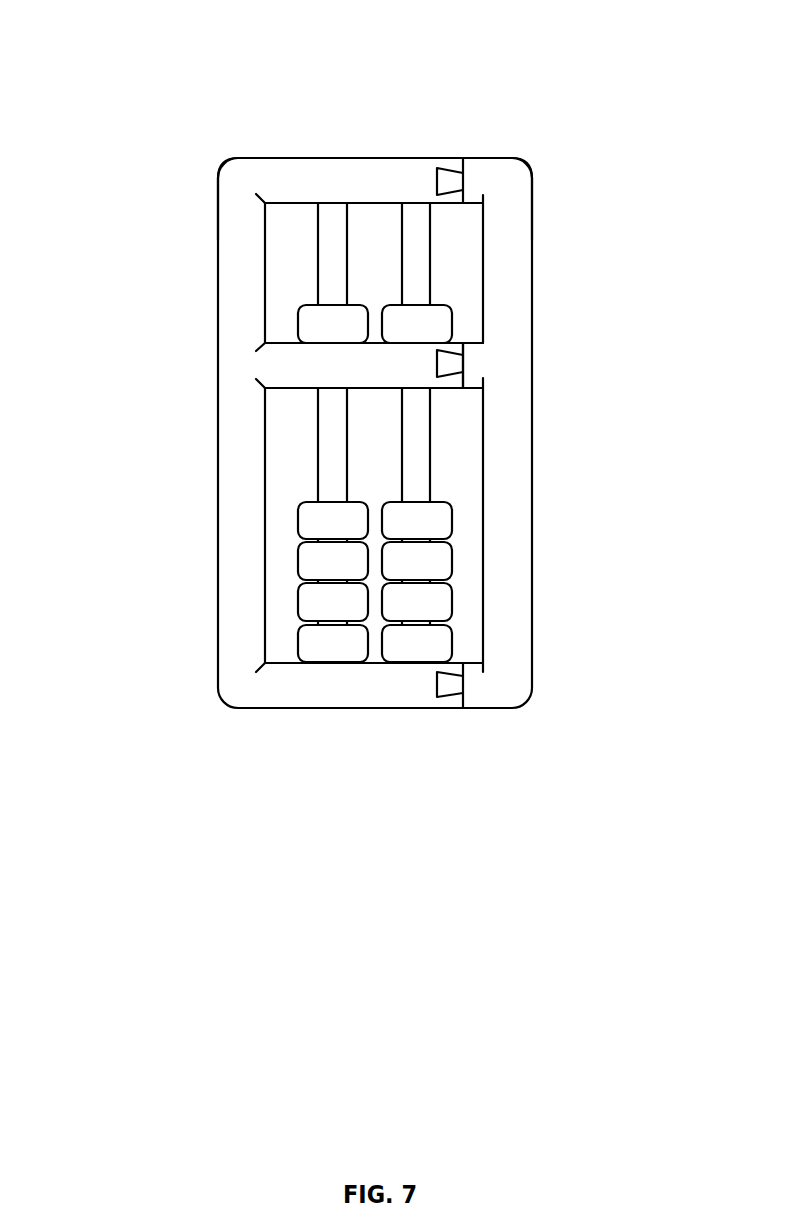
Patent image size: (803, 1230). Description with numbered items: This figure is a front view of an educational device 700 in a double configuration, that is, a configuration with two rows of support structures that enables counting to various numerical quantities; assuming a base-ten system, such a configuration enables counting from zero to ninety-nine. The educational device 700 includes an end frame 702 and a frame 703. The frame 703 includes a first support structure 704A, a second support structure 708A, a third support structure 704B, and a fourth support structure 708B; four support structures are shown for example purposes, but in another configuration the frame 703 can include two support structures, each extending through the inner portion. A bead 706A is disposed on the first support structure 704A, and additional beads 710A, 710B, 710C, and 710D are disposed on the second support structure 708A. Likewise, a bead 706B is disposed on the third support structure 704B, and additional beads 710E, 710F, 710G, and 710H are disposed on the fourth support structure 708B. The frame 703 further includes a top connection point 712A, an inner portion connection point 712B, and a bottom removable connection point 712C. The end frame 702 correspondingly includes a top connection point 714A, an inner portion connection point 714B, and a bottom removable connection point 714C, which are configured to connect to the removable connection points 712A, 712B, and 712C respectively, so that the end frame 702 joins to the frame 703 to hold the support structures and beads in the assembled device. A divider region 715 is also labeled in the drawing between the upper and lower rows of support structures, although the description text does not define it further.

The educational device 700 is at (162, 40).
The end frame 702 is at (521, 162).
The frame 703 is at (225, 158).
The first support structure 704A is at (317, 243).
The third support structure 704B is at (433, 273).
The bead 706A is at (293, 313).
The bead 706B is at (396, 303).
The second support structure 708A is at (313, 445).
The fourth support structure 708B is at (433, 477).
The bead 710A is at (288, 515).
The bead 710B is at (288, 556).
The bead 710C is at (288, 596).
The bead 710D is at (288, 636).
The bead 710E is at (457, 518).
The bead 710F is at (458, 558).
The bead 710G is at (458, 598).
The bead 710H is at (458, 640).
The top connection point 712A is at (433, 173).
The inner portion connection point 712B is at (430, 362).
The bottom removable connection point 712C is at (441, 694).
The top connection point 714A is at (478, 183).
The inner portion connection point 714B is at (480, 364).
The bottom removable connection point 714C is at (492, 694).
The divider 715 is at (287, 371).